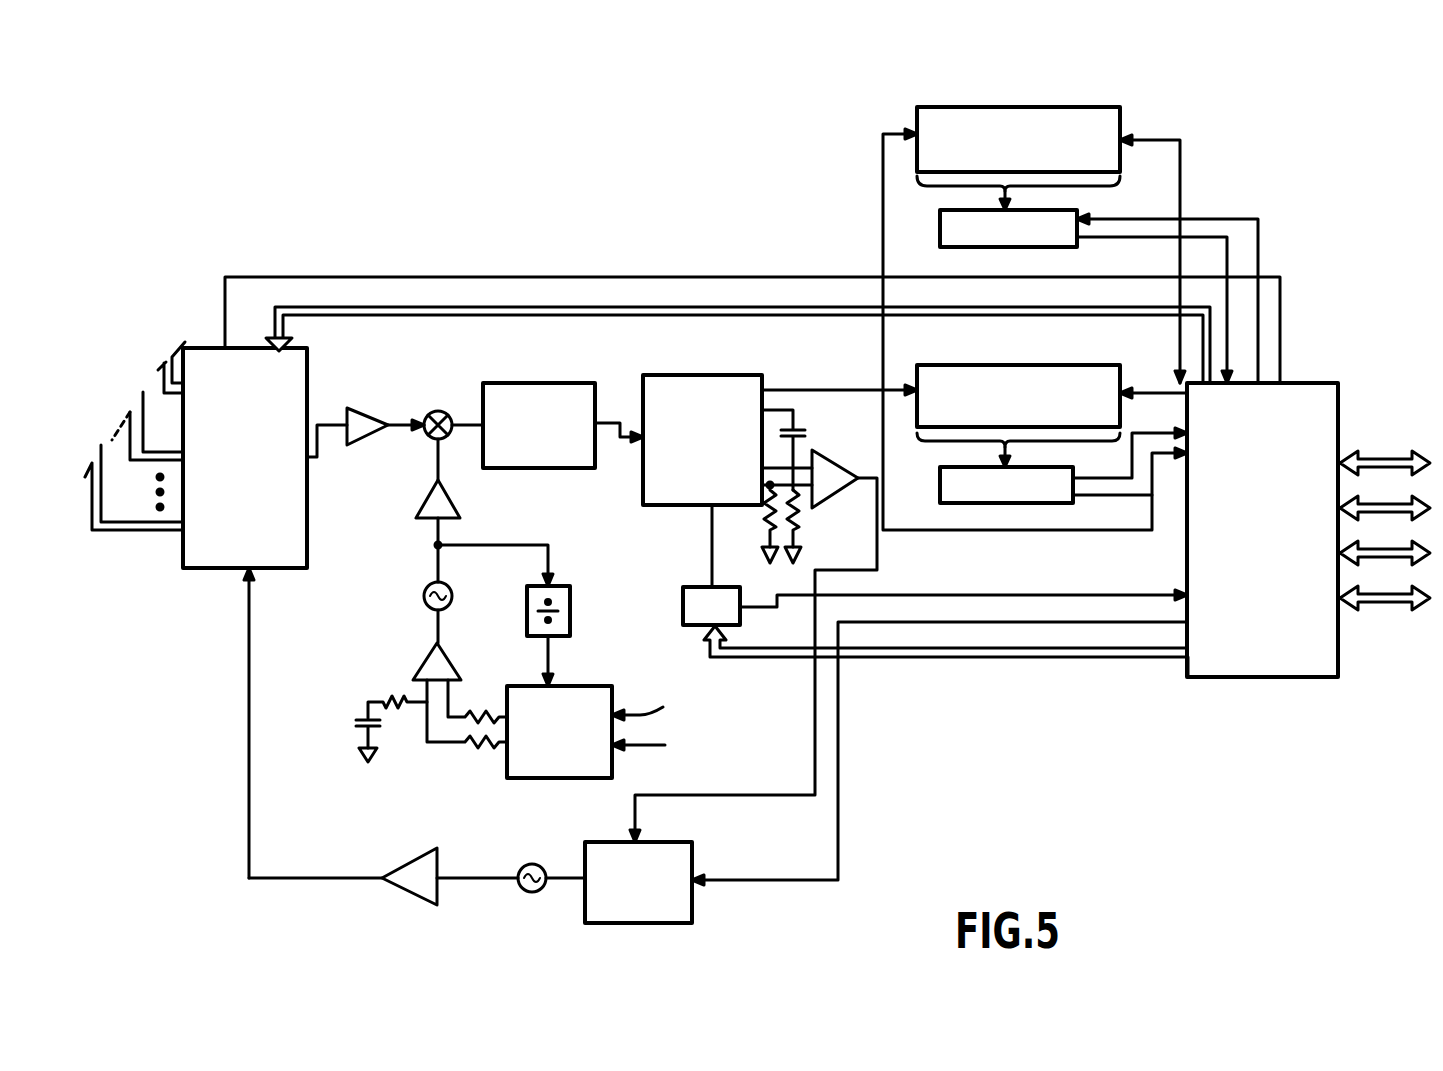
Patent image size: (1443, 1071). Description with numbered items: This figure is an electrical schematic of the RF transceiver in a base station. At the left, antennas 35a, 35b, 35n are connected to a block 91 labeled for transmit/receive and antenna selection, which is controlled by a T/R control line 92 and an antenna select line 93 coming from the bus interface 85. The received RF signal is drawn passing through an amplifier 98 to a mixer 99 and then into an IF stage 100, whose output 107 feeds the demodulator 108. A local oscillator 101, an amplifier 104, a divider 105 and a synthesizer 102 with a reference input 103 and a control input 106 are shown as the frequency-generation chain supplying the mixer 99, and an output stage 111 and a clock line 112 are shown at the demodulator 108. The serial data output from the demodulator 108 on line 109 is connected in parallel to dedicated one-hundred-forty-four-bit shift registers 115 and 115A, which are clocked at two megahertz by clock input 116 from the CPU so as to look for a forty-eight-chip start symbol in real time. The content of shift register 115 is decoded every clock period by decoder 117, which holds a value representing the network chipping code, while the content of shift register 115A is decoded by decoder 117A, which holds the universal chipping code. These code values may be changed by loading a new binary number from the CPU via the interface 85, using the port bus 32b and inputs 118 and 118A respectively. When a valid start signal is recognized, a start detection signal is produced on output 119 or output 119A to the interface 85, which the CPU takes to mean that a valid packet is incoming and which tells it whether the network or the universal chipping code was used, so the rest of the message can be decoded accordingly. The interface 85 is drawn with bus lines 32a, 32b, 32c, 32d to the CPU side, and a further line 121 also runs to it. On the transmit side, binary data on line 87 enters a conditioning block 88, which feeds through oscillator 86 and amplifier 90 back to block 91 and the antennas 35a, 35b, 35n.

The antenna 35a is at (158, 372).
The antenna 35b is at (145, 392).
The antenna 35n is at (101, 447).
The T/R and antenna select circuit 91 is at (307, 520).
The T/R control line 92 is at (570, 275).
The antenna select line 93 is at (473, 318).
The RF amplifier 98 is at (373, 405).
The mixer 99 is at (438, 411).
The 45 MHz IF amplifier 100 is at (557, 385).
The local oscillator 101 is at (423, 596).
The synthesizer 102 is at (593, 687).
The 2 MHz reference input 103 is at (613, 747).
The amplifier 104 is at (425, 655).
The frequency divider 105 is at (570, 610).
The synthesizer control input 106 is at (659, 709).
The demodulator input line 107 is at (622, 440).
The demodulator 108 is at (687, 506).
The line 109 is at (803, 393).
The comparator amplifier 111 is at (828, 457).
The clock line 112 is at (712, 575).
The shift register 115 is at (1125, 330).
The shift register 115A is at (1137, 105).
The clock input 116 is at (1137, 396).
The decoder 117 is at (940, 490).
The decoder 117A is at (940, 222).
The input 118 is at (1132, 442).
The input 118A is at (1205, 218).
The output 119 is at (1138, 495).
The output 119A is at (1148, 238).
The data line to bus interface 121 is at (1016, 593).
The interface 85 is at (1276, 680).
The modulation oscillator 86 is at (536, 864).
The binary data line 87 is at (743, 877).
The signal conditioner 88 is at (585, 905).
The transmit amplifier 90 is at (410, 895).
The bus line 32a is at (1368, 457).
The port bus 32b is at (1367, 503).
The bus line 32c is at (1367, 548).
The bus line 32d is at (1367, 593).